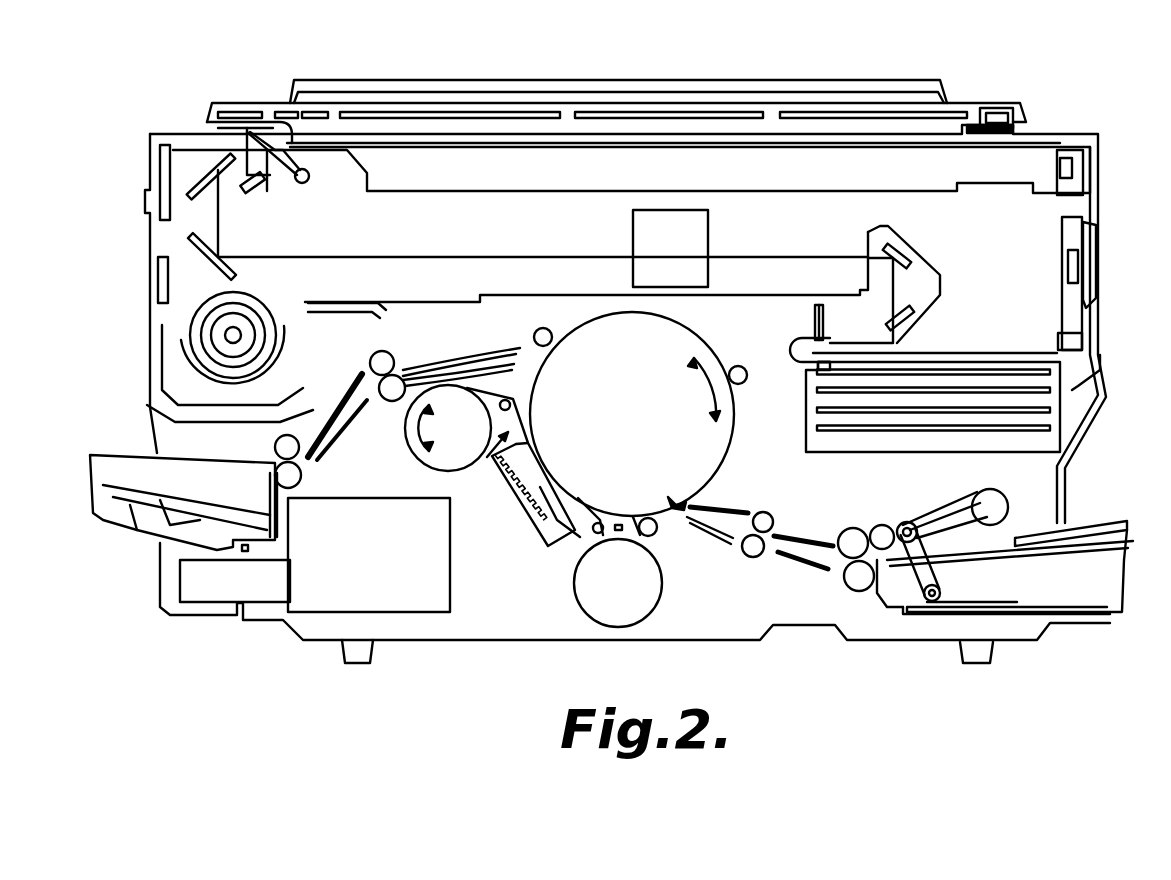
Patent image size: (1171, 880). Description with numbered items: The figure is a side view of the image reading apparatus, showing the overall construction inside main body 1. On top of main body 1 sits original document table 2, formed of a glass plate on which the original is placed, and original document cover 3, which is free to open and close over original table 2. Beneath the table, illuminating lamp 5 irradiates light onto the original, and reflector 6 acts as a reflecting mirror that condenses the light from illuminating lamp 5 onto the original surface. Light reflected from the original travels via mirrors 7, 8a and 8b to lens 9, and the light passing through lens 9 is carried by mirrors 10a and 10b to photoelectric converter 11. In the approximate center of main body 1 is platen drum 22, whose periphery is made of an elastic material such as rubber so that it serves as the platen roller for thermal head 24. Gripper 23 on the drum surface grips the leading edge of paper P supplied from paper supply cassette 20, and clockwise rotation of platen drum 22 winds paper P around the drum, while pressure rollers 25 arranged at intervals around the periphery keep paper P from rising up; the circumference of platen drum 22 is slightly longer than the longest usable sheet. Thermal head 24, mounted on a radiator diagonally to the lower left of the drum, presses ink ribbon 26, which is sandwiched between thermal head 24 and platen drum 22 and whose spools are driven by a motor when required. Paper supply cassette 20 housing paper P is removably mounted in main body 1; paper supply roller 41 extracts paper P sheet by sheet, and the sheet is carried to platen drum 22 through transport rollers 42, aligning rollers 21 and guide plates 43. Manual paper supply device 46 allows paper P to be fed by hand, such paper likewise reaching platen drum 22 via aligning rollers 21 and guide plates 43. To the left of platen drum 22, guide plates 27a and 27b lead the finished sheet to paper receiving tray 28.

The main body 1 is at (1026, 98).
The original document table 2 is at (488, 133).
The original document cover 3 is at (876, 92).
The illuminating lamp 5 is at (301, 184).
The reflector 6 is at (308, 178).
The mirror 7 is at (252, 195).
The mirror 8a is at (203, 181).
The mirror 8b is at (207, 268).
The lens 9 is at (710, 237).
The mirror 10a is at (903, 250).
The mirror 10b is at (914, 324).
The photoelectric converter 11 is at (813, 331).
The paper supply cassette 20 is at (1097, 593).
The aligning rollers 21 is at (755, 556).
The platen drum 22 is at (737, 433).
The gripper 23 is at (672, 500).
The thermal head 24 is at (558, 535).
The pressure rollers 25 is at (535, 334).
The ink ribbon 26 is at (660, 582).
The guide plate 27a is at (458, 358).
The guide plate 27b is at (350, 422).
The paper receiving tray 28 is at (120, 480).
The paper supply roller 41 is at (907, 603).
The transport rollers 42 is at (858, 583).
The guide plates 43 is at (745, 504).
The manual paper supply device 46 is at (1128, 523).
The paper P is at (1097, 575).